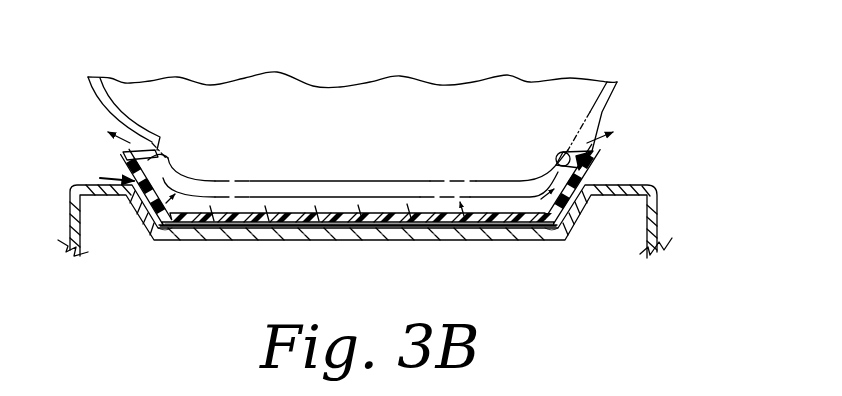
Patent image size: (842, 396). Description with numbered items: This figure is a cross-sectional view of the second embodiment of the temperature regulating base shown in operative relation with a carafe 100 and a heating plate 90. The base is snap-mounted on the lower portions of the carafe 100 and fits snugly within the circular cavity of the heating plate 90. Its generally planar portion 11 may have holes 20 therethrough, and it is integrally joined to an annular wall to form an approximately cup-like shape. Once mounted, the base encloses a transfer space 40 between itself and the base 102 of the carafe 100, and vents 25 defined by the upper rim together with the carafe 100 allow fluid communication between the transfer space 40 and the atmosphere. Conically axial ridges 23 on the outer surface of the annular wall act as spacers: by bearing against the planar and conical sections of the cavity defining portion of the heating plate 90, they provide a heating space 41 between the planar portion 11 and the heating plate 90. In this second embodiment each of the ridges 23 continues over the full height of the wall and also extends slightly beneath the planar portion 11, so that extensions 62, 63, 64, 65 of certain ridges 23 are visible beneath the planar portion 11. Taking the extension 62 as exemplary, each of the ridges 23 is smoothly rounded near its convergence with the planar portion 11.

The carafe 100 is at (134, 96).
The ridges 23 is at (125, 161).
The vents 25 is at (150, 162).
The planar portion 11 is at (290, 212).
The transfer space 40 is at (374, 208).
The base 102 is at (467, 191).
The heating plate 90 is at (636, 171).
The extension 62 is at (182, 232).
The heating space 41 is at (231, 229).
The extension 63 is at (287, 226).
The holes 20 is at (352, 220).
The extension 64 is at (430, 232).
The extension 65 is at (554, 236).